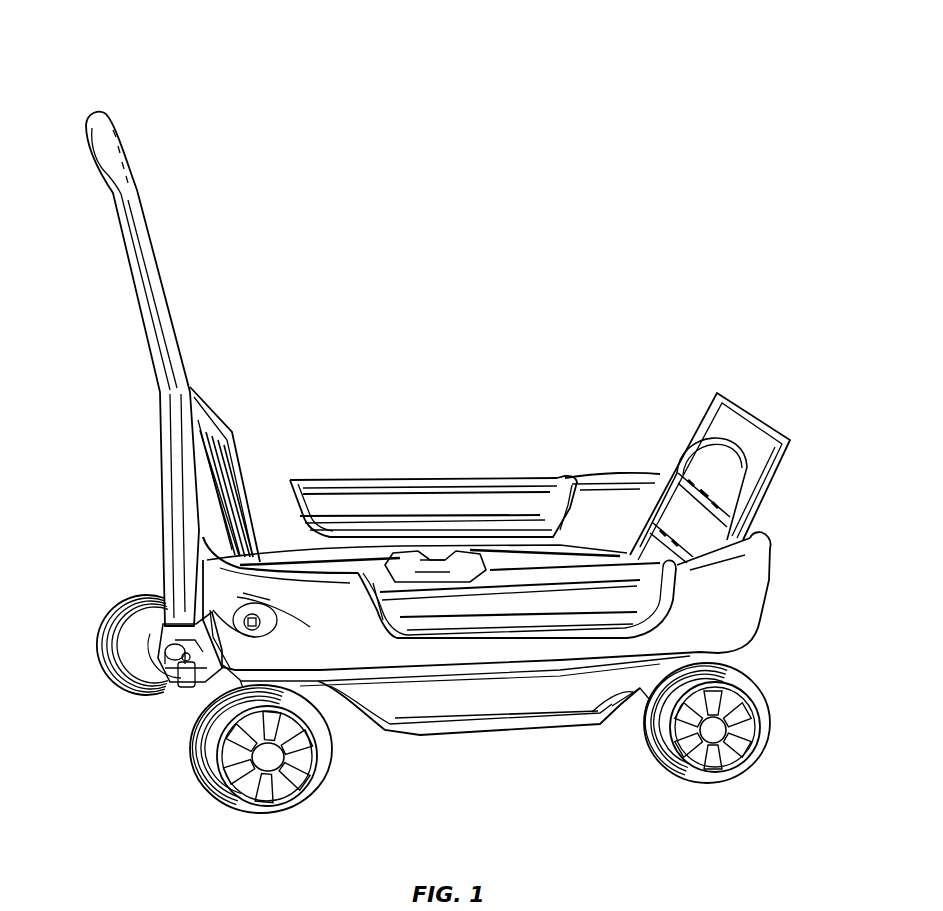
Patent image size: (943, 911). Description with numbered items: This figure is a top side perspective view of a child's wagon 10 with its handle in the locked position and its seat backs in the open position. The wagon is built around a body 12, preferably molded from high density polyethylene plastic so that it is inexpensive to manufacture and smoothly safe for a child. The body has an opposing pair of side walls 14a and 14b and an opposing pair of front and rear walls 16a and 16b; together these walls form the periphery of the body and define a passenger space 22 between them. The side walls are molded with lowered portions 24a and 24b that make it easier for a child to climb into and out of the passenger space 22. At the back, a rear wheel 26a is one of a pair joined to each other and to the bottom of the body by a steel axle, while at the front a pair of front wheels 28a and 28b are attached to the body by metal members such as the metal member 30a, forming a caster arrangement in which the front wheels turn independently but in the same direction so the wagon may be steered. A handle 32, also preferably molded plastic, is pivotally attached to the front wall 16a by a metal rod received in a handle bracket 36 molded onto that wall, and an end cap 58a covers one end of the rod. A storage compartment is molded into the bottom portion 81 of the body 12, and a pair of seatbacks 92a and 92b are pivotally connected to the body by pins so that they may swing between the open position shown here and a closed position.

The wagon 10 is at (155, 44).
The body 12 is at (428, 447).
The side wall 14a is at (348, 640).
The side wall 14b is at (612, 488).
The front wall 16a is at (217, 570).
The rear wall 16b is at (770, 536).
The passenger space 22 is at (372, 578).
The lowered portion 24a is at (487, 580).
The lowered portion 24b is at (478, 483).
The rear wheel 26a is at (765, 737).
The front wheel 28a is at (193, 767).
The front wheel 28b is at (147, 597).
The metal member 30a is at (197, 695).
The handle 32 is at (121, 230).
The handle bracket 36 is at (138, 627).
The end cap 58a is at (158, 682).
The bottom portion 81 is at (510, 711).
The seatback 92a is at (210, 401).
The seatback 92b is at (743, 404).